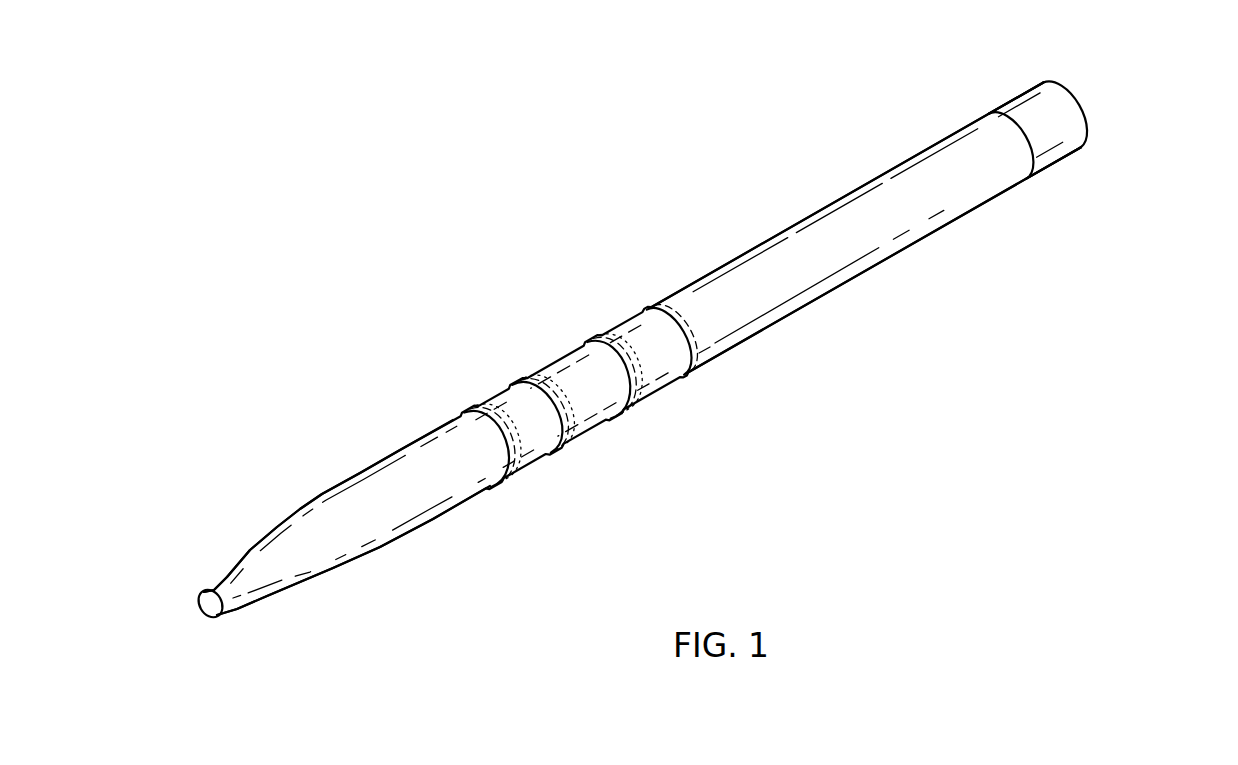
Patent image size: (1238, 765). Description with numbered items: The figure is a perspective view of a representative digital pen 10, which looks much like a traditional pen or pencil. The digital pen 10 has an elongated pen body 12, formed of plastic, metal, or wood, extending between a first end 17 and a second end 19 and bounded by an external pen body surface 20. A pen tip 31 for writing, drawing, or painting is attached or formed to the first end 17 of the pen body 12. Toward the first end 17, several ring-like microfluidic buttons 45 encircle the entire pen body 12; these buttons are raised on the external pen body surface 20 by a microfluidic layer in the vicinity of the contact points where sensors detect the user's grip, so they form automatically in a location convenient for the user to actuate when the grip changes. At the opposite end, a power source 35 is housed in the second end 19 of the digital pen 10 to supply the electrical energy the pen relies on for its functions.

The digital pen 10 is at (470, 188).
The pen body 12 is at (813, 300).
The first end 17 is at (174, 586).
The second end 19 is at (1120, 138).
The external pen body surface 20 is at (730, 232).
The pen tip 31 is at (200, 612).
The power source 35 is at (1054, 82).
The microfluidic buttons 45 is at (607, 332).